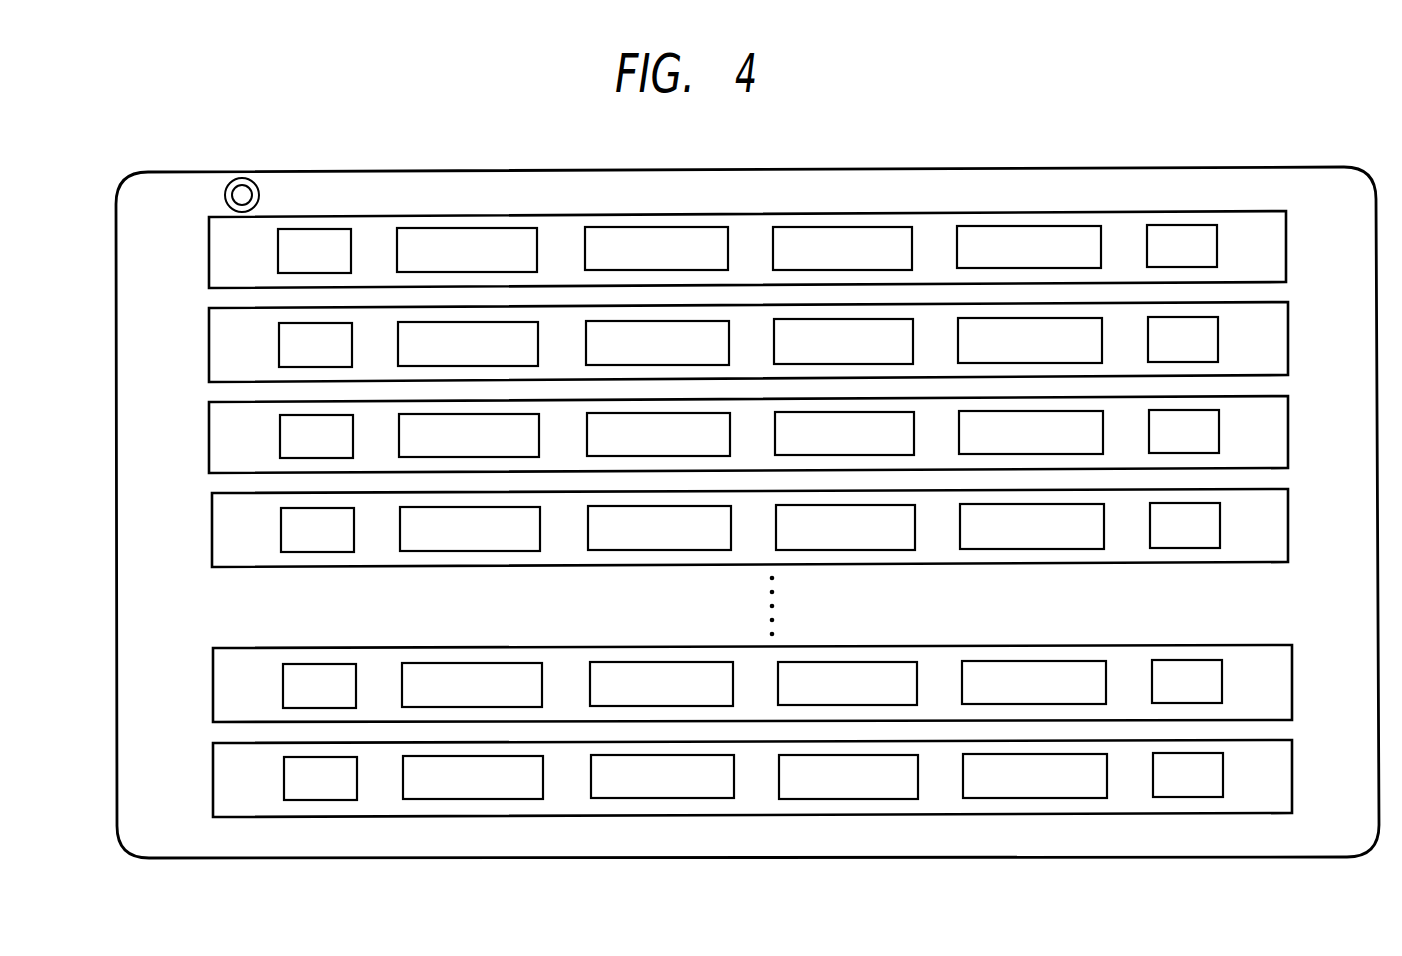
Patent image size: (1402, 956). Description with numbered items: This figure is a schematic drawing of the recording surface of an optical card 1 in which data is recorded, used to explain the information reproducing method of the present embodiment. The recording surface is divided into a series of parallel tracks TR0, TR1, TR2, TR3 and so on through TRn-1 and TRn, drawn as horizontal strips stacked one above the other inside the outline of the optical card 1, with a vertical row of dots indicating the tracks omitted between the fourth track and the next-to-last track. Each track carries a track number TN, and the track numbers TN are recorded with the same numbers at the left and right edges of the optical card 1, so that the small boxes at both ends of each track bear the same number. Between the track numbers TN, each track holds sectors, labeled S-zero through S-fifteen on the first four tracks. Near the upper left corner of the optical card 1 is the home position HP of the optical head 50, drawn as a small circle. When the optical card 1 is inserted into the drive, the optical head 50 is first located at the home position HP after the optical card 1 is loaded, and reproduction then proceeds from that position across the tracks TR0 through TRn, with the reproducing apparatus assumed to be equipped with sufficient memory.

The optical card 1 is at (1290, 166).
The optical head 50 is at (229, 193).
The home position HP is at (258, 188).
The track numbers TN is at (336, 228).
The track TR0 is at (1288, 248).
The track TR1 is at (1289, 341).
The track TR2 is at (1289, 434).
The track TR3 is at (1290, 528).
The track TRn-1 is at (1292, 657).
The track TRn is at (1293, 780).